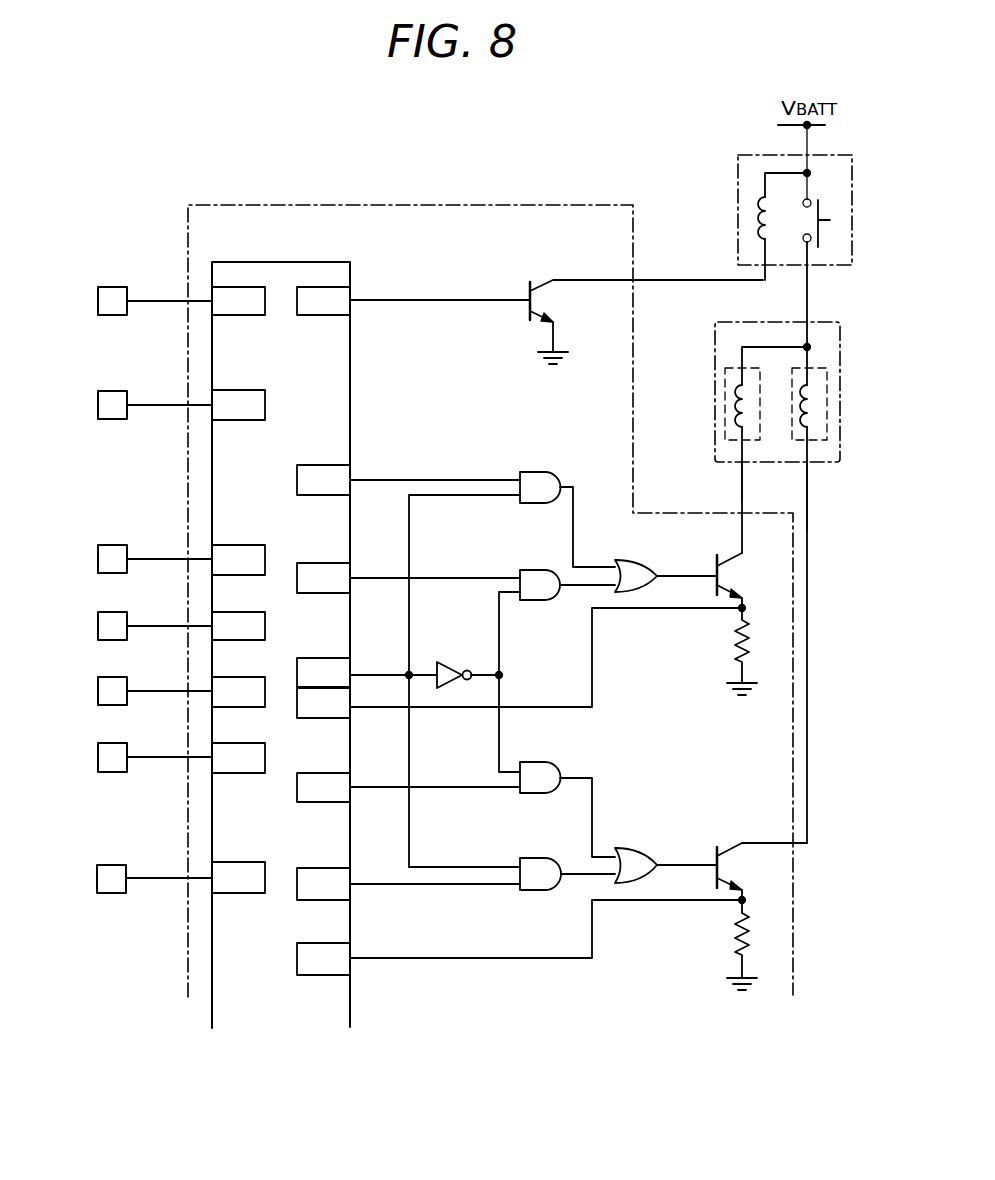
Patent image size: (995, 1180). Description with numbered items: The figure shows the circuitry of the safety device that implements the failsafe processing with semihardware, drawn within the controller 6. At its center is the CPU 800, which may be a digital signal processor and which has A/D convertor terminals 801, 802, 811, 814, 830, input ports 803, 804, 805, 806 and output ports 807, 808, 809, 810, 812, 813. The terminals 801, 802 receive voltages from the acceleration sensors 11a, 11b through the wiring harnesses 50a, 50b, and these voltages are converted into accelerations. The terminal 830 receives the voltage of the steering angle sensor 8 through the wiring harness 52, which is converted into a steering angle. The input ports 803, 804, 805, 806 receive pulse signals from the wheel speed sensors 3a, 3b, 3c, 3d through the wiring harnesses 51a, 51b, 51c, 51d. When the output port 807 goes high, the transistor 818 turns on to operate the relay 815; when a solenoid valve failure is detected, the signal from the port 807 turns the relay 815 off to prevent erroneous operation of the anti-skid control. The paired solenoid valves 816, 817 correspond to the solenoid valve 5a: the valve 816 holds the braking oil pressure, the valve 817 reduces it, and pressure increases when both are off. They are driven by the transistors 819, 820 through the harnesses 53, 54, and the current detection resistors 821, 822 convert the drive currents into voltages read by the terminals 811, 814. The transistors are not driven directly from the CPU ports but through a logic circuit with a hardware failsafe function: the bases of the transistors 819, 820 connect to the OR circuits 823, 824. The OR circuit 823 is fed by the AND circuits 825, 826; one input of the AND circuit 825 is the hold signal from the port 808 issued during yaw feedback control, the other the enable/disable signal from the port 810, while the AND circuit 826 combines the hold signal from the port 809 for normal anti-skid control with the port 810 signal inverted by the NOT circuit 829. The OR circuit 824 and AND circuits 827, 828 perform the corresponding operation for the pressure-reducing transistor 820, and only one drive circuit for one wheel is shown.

The controller 6 is at (633, 205).
The CPU 800 is at (352, 262).
The A/D convertor terminal 801 is at (238, 301).
The A/D convertor terminal 802 is at (238, 405).
The input port 803 is at (238, 560).
The input port 804 is at (238, 626).
The input port 805 is at (238, 692).
The input port 806 is at (238, 758).
The A/D convertor terminal 830 is at (238, 877).
The output port 807 is at (323, 301).
The output port 808 is at (323, 480).
The output port 809 is at (323, 578).
The output port 810 is at (323, 672).
The A/D convertor terminal 811 is at (323, 703).
The output port 812 is at (323, 787).
The output port 813 is at (323, 884).
The A/D convertor terminal 814 is at (323, 959).
The acceleration sensor 11a is at (98, 292).
The acceleration sensor 11b is at (98, 397).
The wheel speed sensor 3a is at (98, 550).
The wheel speed sensor 3b is at (98, 619).
The wheel speed sensor 3c is at (98, 686).
The wheel speed sensor 3d is at (98, 754).
The steering angle sensor 8 is at (97, 870).
The wiring harness 50a is at (152, 300).
The wiring harness 50b is at (152, 404).
The wiring harness 51a is at (152, 558).
The wiring harness 51b is at (152, 626).
The wiring harness 51c is at (155, 690).
The wiring harness 51d is at (155, 757).
The wiring harness 52 is at (152, 877).
The harness 53 is at (742, 482).
The harness 54 is at (807, 546).
The relay 815 is at (738, 182).
The solenoid valve 816 is at (725, 366).
The solenoid valve 817 is at (822, 366).
The solenoid valve 5a is at (773, 582).
The transistor 818 is at (541, 283).
The transistor 819 is at (722, 565).
The transistor 820 is at (731, 845).
The current detection resistor 821 is at (736, 645).
The current detection resistor 822 is at (736, 940).
The OR circuit 823 is at (626, 561).
The OR circuit 824 is at (625, 849).
The AND circuit 825 is at (531, 473).
The AND circuit 826 is at (533, 571).
The AND circuit 827 is at (562, 763).
The AND circuit 828 is at (532, 859).
The NOT circuit 829 is at (447, 662).